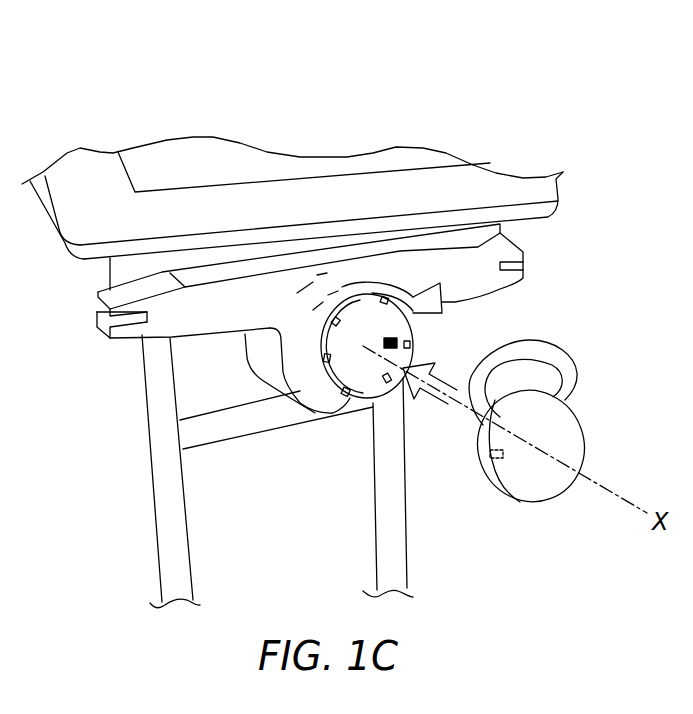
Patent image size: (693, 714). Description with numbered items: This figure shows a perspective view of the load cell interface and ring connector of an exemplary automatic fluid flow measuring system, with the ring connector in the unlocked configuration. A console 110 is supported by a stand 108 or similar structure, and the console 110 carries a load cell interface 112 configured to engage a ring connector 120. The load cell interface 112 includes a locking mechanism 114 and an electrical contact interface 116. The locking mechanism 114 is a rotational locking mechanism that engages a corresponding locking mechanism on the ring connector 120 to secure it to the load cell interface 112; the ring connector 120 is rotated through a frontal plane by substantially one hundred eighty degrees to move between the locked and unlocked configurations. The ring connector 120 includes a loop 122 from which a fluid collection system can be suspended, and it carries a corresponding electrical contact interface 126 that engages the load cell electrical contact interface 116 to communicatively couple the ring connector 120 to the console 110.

The stand 108 is at (160, 478).
The console 110 is at (213, 105).
The load cell interface 112 is at (340, 360).
The locking mechanism 114 is at (352, 400).
The electrical contact interface 116 is at (397, 343).
The ring connector 120 is at (565, 438).
The loop 122 is at (568, 367).
The ring connector electrical contact interface 126 is at (490, 454).